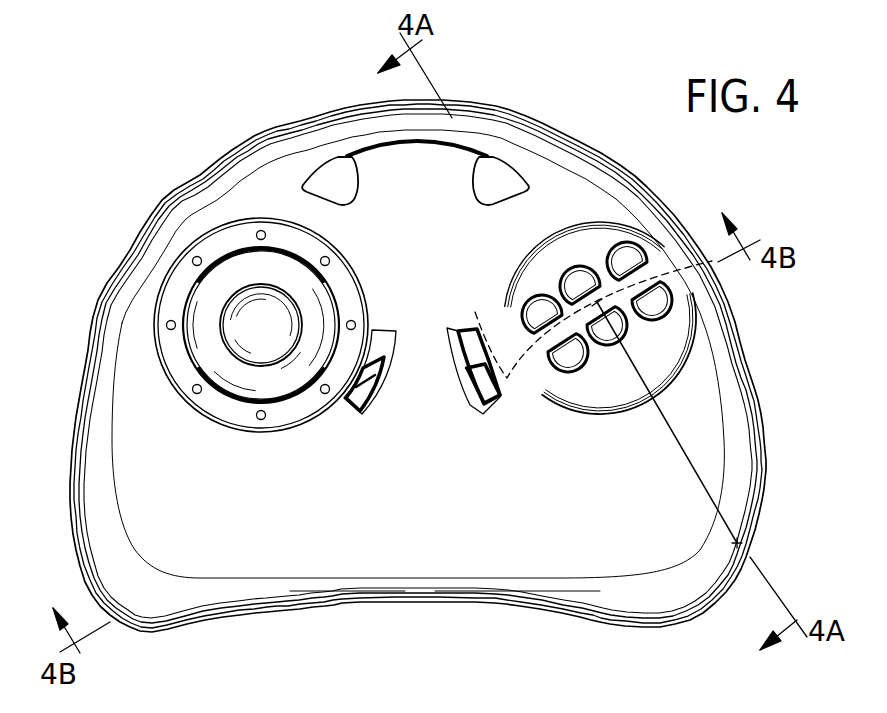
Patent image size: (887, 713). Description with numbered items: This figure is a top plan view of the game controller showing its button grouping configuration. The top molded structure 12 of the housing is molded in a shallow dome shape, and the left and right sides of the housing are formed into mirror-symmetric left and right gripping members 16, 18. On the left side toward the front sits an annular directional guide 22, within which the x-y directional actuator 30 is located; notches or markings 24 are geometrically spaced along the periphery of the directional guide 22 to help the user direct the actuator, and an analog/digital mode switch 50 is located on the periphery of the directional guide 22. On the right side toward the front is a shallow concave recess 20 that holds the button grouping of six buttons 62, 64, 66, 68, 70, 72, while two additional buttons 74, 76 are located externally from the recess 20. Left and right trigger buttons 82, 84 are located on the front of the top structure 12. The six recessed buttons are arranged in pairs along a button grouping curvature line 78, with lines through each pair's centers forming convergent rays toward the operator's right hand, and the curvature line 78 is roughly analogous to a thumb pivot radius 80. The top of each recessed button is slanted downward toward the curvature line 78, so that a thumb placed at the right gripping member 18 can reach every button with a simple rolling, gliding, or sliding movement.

The top molded structure 12 is at (86, 390).
The left gripping member 16 is at (76, 545).
The right gripping member 18 is at (763, 503).
The concave recess 20 is at (580, 382).
The annular directional guide 22 is at (217, 242).
The notches or markings 24 is at (192, 261).
The x-y directional actuator 30 is at (243, 325).
The analog/digital mode switch 50 is at (355, 402).
The button 62 is at (568, 352).
The button 64 is at (618, 322).
The button 66 is at (655, 300).
The button 68 is at (627, 265).
The button 70 is at (580, 292).
The button 72 is at (542, 318).
The additional button 74 is at (483, 390).
The additional button 76 is at (466, 342).
The button grouping curvature line 78 is at (588, 319).
The thumb pivot radius 80 is at (700, 478).
The left trigger button 82 is at (335, 185).
The right trigger button 84 is at (495, 185).